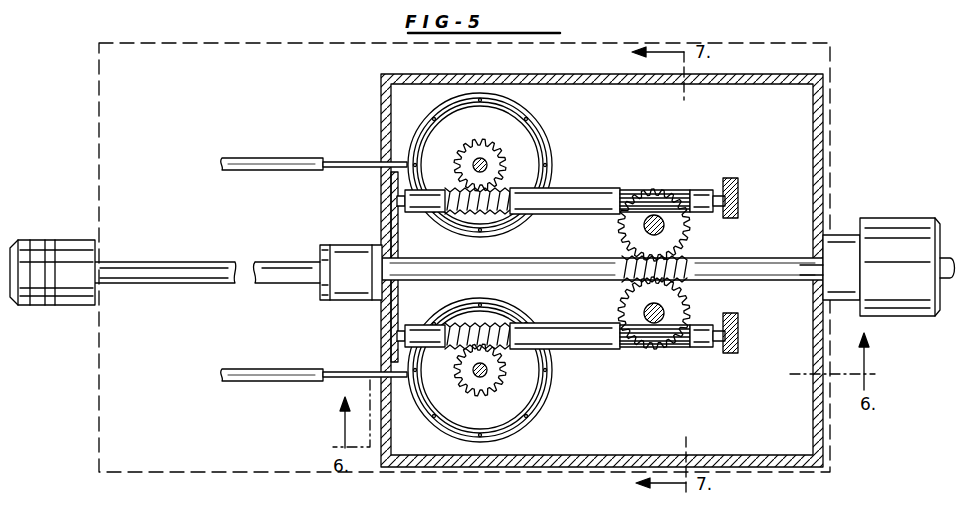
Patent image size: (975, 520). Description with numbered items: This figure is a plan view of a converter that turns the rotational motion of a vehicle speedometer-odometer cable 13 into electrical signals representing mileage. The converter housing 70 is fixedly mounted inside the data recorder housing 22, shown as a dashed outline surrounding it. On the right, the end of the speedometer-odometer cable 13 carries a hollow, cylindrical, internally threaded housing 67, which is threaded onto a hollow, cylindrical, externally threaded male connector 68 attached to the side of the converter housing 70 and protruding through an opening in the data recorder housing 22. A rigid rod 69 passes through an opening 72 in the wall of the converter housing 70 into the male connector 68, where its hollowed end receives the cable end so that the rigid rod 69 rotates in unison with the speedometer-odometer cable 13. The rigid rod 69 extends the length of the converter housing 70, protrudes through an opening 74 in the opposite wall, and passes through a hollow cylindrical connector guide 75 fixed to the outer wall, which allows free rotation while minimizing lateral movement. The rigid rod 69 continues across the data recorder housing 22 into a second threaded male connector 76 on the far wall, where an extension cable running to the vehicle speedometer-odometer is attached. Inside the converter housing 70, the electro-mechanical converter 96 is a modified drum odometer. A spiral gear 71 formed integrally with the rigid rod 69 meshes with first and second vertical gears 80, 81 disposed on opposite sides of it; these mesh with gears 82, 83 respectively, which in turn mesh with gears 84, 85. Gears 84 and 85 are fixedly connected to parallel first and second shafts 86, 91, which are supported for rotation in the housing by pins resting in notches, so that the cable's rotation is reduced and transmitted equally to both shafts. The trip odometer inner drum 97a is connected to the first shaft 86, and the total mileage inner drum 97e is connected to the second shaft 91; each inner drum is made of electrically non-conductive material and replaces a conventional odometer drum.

The data recorder housing 22 is at (220, 42).
The converter housing 70 is at (762, 72).
The inner drum 97a is at (505, 113).
The gear 84 is at (500, 152).
The first shaft 86 is at (490, 163).
The inner drum 97e is at (490, 413).
The gear 85 is at (500, 383).
The second shaft 91 is at (490, 370).
The gear 82 is at (662, 190).
The gear 83 is at (660, 336).
The electro-mechanical converter 96 is at (600, 172).
The rigid rod 69 is at (752, 258).
The spiral gear 71 is at (690, 253).
The first vertical gear 80 is at (632, 232).
The second vertical gear 81 is at (625, 300).
The opening 74 is at (385, 236).
The connector guide 75 is at (355, 296).
The second threaded male connector 76 is at (60, 240).
The male connector 68 is at (848, 235).
The threaded housing 67 is at (895, 218).
The speedometer-odometer cable 13 is at (948, 258).
The opening 72 is at (812, 283).